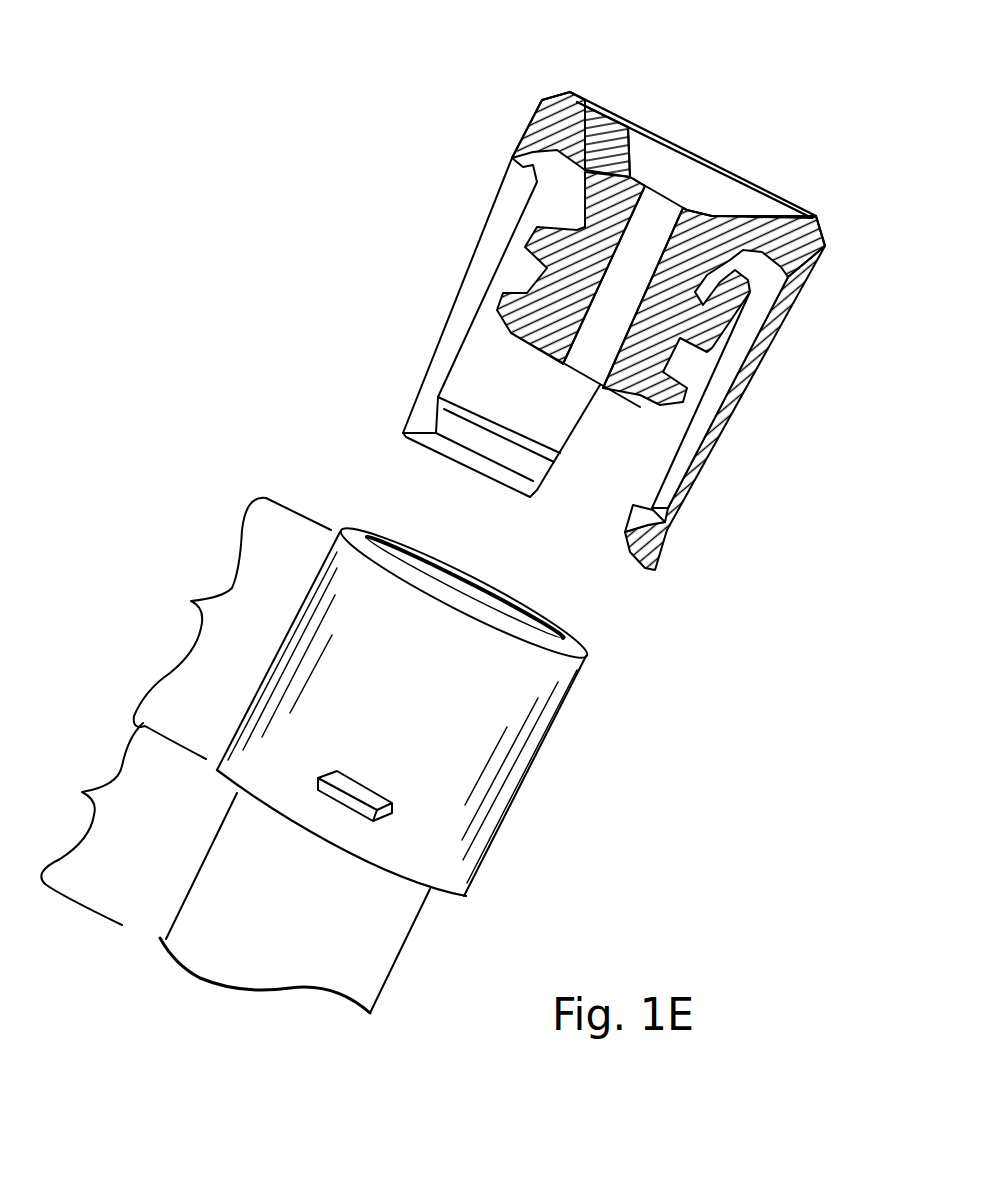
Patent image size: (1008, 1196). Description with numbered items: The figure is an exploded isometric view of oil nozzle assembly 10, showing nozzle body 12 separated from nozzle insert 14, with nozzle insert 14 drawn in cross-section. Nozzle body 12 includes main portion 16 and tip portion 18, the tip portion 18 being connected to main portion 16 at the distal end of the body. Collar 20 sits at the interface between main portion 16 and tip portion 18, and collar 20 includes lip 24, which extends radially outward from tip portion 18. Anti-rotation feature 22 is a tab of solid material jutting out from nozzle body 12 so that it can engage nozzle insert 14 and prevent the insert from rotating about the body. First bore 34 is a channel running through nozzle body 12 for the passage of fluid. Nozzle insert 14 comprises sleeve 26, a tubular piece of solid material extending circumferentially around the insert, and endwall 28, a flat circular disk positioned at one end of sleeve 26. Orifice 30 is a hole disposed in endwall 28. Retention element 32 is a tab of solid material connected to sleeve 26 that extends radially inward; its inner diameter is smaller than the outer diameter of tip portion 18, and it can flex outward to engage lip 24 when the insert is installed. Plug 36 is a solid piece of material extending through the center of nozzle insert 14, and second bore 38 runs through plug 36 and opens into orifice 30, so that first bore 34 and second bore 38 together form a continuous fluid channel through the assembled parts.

The oil nozzle assembly 10 is at (284, 140).
The nozzle body 12 is at (530, 770).
The nozzle insert 14 is at (462, 285).
The main portion 16 is at (92, 824).
The tip portion 18 is at (232, 628).
The collar 20 is at (228, 785).
The anti-rotation feature 22 is at (315, 777).
The lip 24 is at (467, 892).
The sleeve 26 is at (717, 458).
The endwall 28 is at (816, 218).
The orifice 30 is at (690, 187).
The retention element 32 is at (633, 507).
The first bore 34 is at (459, 587).
The plug 36 is at (625, 405).
The second bore 38 is at (623, 237).